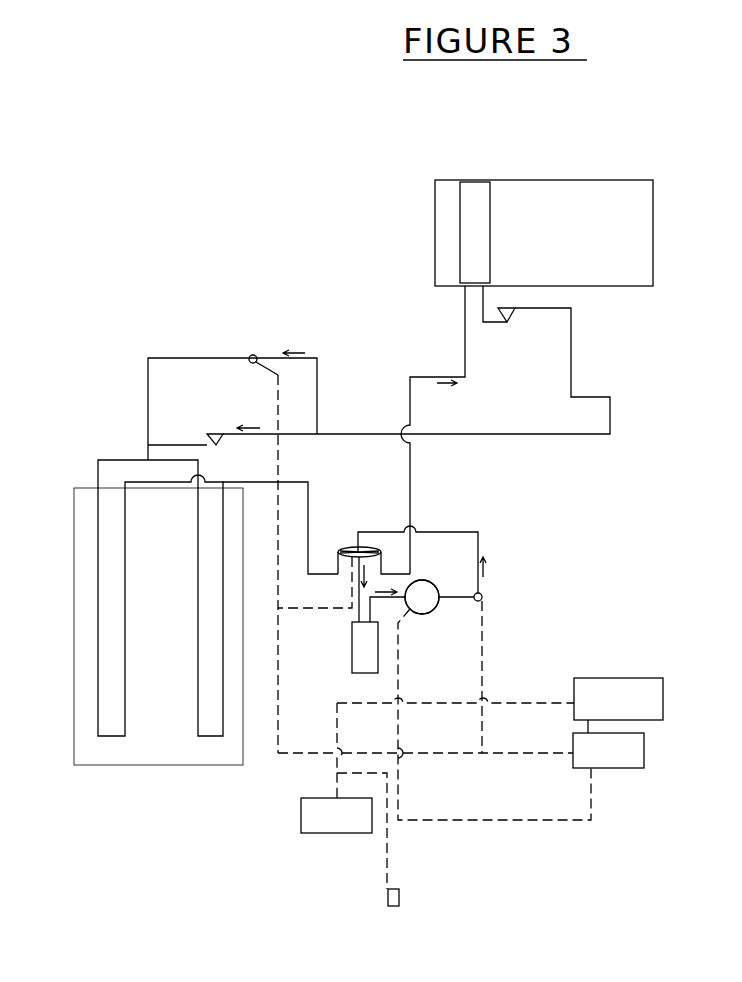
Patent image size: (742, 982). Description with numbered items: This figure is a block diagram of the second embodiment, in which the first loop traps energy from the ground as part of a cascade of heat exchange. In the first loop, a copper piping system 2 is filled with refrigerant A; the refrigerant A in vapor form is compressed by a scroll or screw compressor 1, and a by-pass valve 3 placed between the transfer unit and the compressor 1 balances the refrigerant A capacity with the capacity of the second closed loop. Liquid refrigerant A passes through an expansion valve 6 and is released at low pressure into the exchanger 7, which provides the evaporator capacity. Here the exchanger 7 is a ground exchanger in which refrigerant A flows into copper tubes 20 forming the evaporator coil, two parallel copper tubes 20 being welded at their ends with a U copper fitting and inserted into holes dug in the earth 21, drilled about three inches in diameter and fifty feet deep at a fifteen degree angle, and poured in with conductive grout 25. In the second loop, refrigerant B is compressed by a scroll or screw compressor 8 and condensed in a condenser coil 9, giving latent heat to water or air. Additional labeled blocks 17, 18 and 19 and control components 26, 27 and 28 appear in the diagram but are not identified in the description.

The air duct or/and radiant floor 19 is at (541, 180).
The heat exchanger 18 is at (460, 258).
The valve 17 is at (509, 314).
The by-pass valve 3 is at (549, 434).
The holes dug in the earth 21 is at (218, 358).
The copper tube 20 is at (256, 355).
The expansion valve 6 is at (218, 432).
The exchanger 7 is at (198, 637).
The scroll or screw compressor 8 is at (349, 548).
The refrigerant A is at (421, 590).
The scroll or screw compressor 1 is at (432, 584).
The copper piping system 2 is at (482, 594).
The condenser coil 9 is at (352, 640).
The conductive grout 25 is at (574, 695).
The relays 26 is at (644, 748).
The temperature control 27 is at (301, 808).
The sensor 28 is at (389, 898).